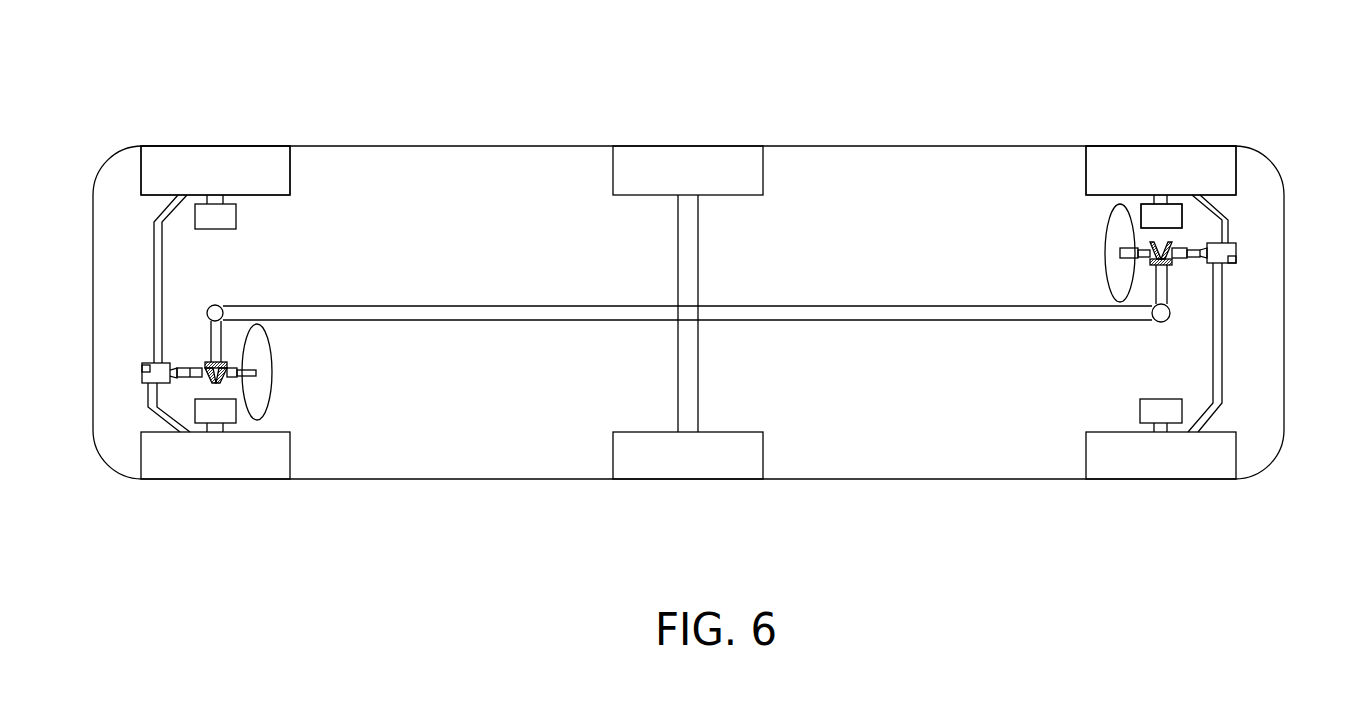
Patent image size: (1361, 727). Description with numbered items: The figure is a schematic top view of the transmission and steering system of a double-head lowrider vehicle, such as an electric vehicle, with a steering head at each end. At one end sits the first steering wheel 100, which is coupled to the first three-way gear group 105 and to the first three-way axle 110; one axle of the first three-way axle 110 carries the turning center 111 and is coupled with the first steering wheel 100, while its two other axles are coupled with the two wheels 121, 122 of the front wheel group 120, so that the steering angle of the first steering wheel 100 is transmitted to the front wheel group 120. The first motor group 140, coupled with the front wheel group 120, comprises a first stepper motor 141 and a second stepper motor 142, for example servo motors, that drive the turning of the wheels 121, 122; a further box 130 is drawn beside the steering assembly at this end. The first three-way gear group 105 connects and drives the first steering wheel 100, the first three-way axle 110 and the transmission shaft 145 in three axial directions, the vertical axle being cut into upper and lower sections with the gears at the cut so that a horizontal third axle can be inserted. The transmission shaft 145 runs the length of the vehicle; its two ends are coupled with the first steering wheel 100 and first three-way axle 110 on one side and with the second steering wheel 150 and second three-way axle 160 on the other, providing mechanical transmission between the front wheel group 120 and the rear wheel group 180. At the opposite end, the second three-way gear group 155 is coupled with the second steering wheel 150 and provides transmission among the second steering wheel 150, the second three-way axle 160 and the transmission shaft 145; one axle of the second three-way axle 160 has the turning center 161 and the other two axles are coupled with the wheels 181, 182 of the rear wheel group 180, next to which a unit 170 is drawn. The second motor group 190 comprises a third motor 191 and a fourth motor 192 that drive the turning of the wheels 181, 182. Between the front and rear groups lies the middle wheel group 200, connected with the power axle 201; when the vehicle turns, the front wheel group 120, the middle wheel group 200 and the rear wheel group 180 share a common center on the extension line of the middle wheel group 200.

The first steering wheel 100 is at (1118, 235).
The first three-way gear group 105 is at (1150, 268).
The first three-way axle 110 is at (1166, 291).
The turning center 111 is at (1150, 258).
The front wheel group 120 is at (1123, 163).
The wheel 121 is at (1158, 170).
The wheel 122 is at (1157, 462).
The second hydraulic pump 130 is at (1238, 258).
The first motor group 140 is at (1148, 212).
The first stepper motor 141 is at (1165, 212).
The second stepper motor 142 is at (1147, 408).
The transmission shaft 145 is at (533, 318).
The second steering wheel 150 is at (263, 358).
The second three-way gear group 155 is at (227, 380).
The second three-way axle 160 is at (214, 335).
The turning center 161 is at (157, 412).
The first hydraulic pump 170 is at (143, 368).
The rear wheel group 180 is at (210, 162).
The wheel 181 is at (263, 160).
The wheel 182 is at (253, 465).
The second motor group 190 is at (225, 217).
The third motor 191 is at (168, 207).
The fourth motor 192 is at (209, 410).
The middle wheel group 200 is at (690, 163).
The power axle 201 is at (690, 258).